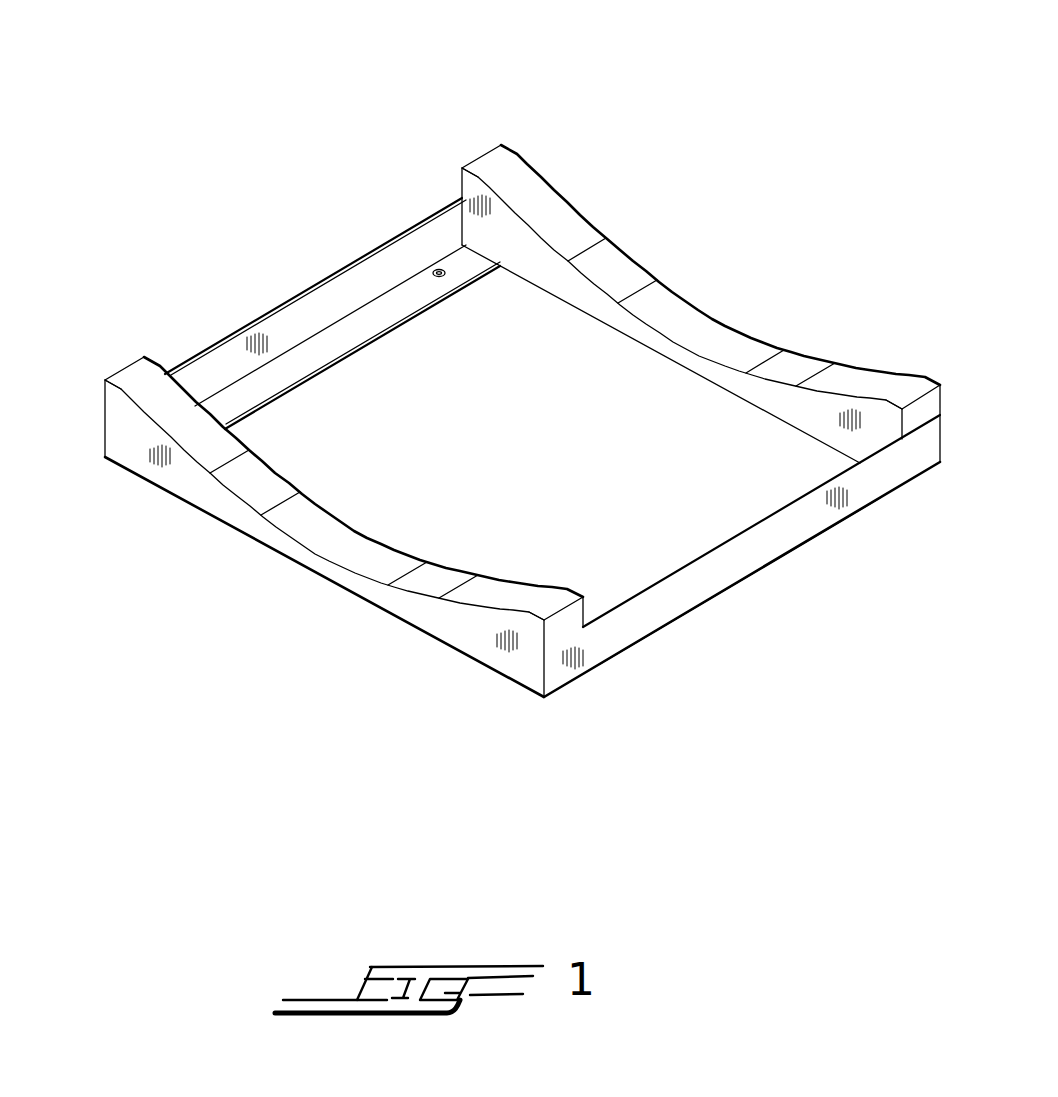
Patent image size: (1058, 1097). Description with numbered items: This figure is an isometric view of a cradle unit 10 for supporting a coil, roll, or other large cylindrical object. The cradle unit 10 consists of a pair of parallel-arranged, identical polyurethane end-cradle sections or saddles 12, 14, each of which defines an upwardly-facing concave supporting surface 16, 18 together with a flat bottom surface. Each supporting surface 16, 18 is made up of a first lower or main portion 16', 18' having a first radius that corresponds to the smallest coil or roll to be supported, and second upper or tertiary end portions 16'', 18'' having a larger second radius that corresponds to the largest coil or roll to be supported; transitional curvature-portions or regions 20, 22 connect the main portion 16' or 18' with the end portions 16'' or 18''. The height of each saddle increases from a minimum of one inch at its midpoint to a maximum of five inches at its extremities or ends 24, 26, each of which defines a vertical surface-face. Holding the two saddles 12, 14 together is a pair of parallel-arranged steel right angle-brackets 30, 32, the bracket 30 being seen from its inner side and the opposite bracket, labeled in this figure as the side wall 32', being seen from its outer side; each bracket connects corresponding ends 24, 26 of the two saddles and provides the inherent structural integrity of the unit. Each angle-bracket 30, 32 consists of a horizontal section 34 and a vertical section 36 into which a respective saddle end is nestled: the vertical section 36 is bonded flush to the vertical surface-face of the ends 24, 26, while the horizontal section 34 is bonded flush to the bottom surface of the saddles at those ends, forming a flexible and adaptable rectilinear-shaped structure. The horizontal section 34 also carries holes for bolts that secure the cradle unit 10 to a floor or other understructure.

The cradle unit 10 is at (811, 238).
The end-cradle section or saddle 12 is at (183, 497).
The end-cradle section or saddle 14 is at (716, 261).
The upwardly-facing concave supporting surface 16 is at (318, 521).
The first lower or main portion 16' is at (259, 536).
The second upper or tertiary end portion 16'' is at (318, 537).
The upwardly-facing concave supporting surface 18 is at (701, 291).
The first lower or main portion 18' is at (673, 287).
The second upper or tertiary end portion 18'' is at (701, 264).
The transitional curvature-portion 20 is at (212, 470).
The transitional curvature-portion 22 is at (597, 257).
The end of end-cradle section 24 is at (106, 379).
The end of end-cradle section 26 is at (484, 158).
The right angle-bracket 30 is at (274, 262).
The right angle-bracket 32 is at (742, 556).
The left side wall 32' is at (315, 257).
The horizontal section 34 is at (373, 320).
The vertical section 36 is at (213, 357).